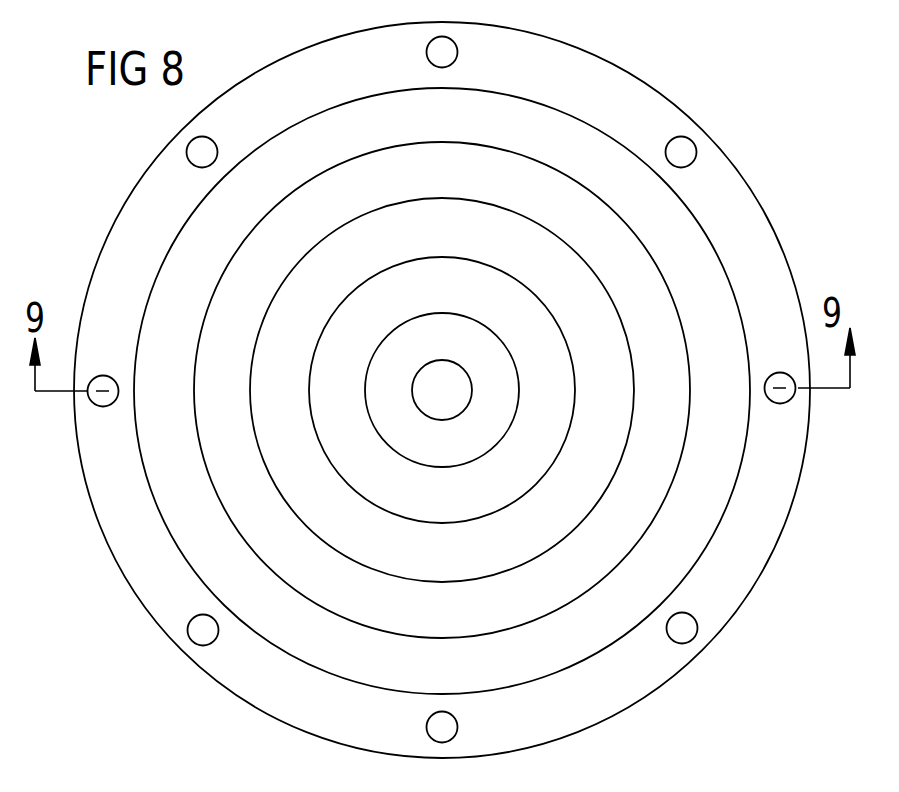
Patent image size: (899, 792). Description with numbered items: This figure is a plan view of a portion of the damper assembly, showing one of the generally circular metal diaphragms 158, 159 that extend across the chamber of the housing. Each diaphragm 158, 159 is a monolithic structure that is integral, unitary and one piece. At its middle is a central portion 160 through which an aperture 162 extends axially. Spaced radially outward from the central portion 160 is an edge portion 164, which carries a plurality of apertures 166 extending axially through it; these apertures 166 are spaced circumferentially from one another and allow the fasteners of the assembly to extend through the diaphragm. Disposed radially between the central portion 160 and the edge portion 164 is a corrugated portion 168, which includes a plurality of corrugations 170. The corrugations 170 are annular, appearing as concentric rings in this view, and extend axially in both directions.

The diaphragm 158 is at (665, 92).
The upper diaphragm 159 is at (461, 376).
The central portion 160 is at (527, 458).
The aperture 162 is at (433, 375).
The edge portion 164 is at (428, 390).
The apertures 166 is at (96, 404).
The corrugated portion 168 is at (542, 620).
The corrugations 170 is at (395, 562).